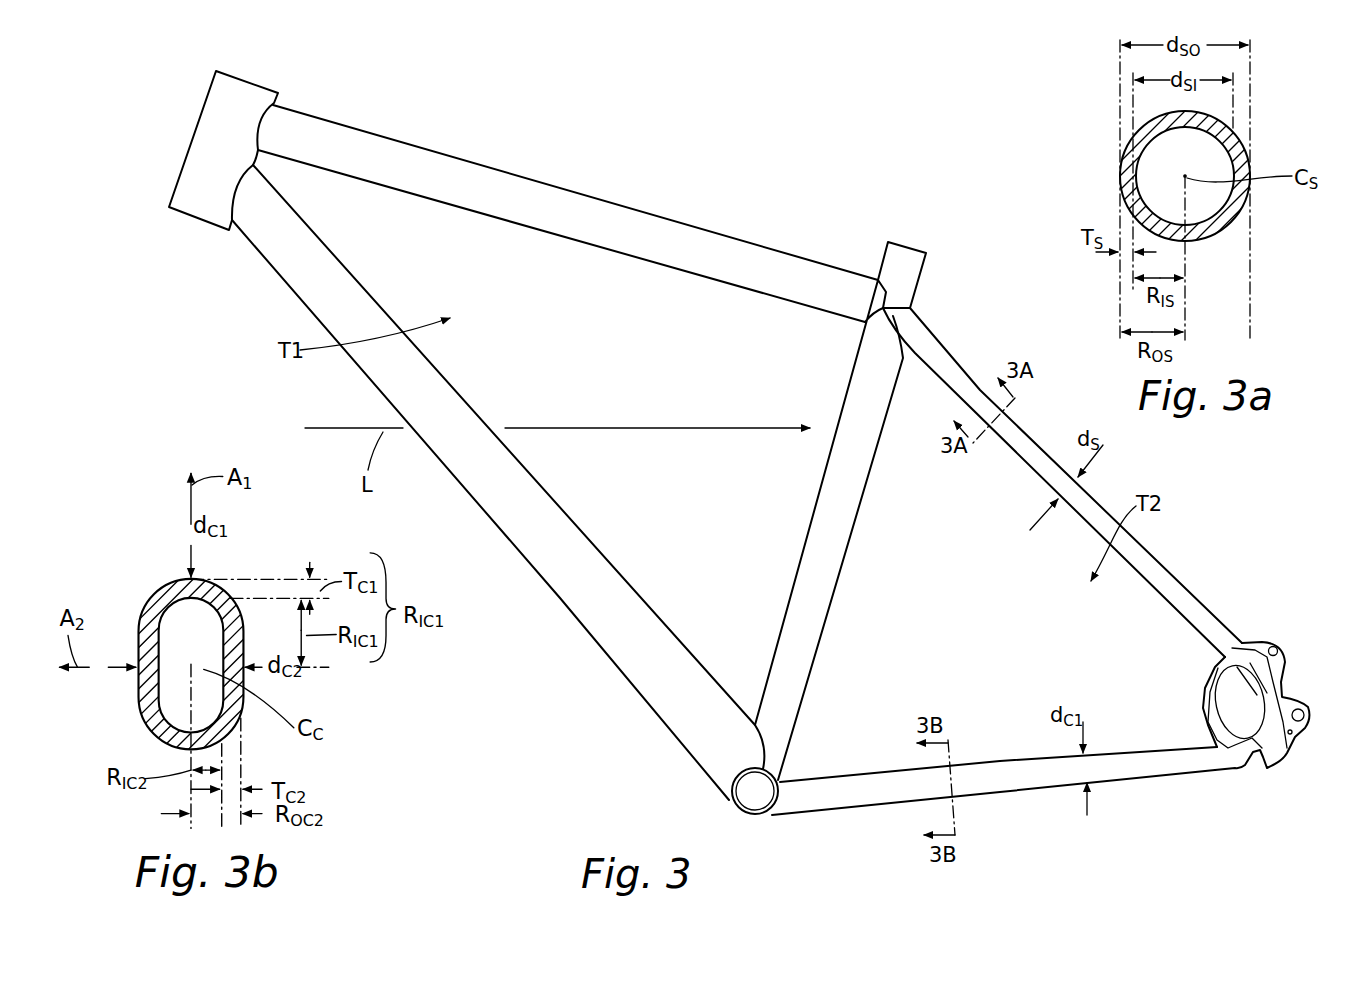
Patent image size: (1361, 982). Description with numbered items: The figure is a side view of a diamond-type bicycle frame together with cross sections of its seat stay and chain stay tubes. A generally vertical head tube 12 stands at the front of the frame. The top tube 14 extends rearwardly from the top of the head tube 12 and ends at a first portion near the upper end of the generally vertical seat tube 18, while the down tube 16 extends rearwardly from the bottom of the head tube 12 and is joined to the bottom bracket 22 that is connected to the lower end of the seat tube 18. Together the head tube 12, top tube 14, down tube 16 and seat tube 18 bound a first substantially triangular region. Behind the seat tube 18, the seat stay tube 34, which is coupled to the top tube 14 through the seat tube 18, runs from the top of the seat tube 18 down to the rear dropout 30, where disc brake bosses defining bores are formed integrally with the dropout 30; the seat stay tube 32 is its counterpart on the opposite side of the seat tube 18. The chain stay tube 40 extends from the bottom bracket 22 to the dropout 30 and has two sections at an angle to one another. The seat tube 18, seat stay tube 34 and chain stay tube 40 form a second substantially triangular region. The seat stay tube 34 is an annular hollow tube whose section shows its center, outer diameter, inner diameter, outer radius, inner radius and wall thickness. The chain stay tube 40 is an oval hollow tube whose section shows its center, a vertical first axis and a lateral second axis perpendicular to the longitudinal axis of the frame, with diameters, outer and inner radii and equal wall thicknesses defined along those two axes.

In FIG. 3, the head tube 12 is at (192, 134).
In FIG. 3, the top tube 14 is at (588, 191).
In FIG. 3, the down tube 16 is at (618, 673).
In FIG. 3, the seat tube 18 is at (881, 254).
In FIG. 3, the bottom bracket 22 is at (762, 818).
In FIG. 3, the rear dropout 30 is at (1284, 688).
In FIG. 3, the seat stay tube 32 is at (1238, 688).
In FIG. 3, the seat stay tube 34 is at (1191, 590).
In FIG. 3A, the seat stay tube 34 is at (1274, 133).
In FIG. 3, the chain stay tube 40 is at (998, 793).